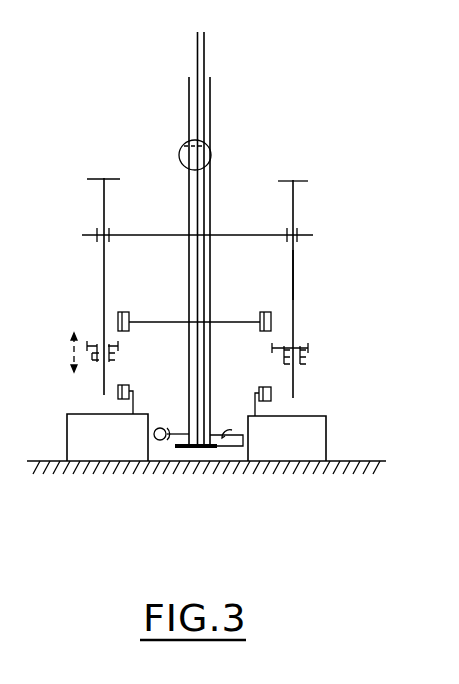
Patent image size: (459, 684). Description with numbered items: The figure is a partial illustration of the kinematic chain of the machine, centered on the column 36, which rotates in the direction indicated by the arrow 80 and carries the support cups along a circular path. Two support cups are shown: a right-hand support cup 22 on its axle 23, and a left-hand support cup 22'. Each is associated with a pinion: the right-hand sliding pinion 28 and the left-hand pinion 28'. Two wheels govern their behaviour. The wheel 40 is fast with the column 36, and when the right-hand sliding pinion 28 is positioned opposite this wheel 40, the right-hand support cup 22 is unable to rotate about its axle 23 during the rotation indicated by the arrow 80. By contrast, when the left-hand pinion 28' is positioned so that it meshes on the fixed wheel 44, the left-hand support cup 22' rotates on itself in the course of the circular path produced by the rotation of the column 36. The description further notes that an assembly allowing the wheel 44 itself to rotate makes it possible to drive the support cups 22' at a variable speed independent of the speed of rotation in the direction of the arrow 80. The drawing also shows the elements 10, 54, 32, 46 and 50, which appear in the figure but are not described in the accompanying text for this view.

The central mast 10 is at (204, 62).
The column 36 is at (210, 117).
The arrow 80 is at (211, 159).
The right-hand support cup 22 is at (322, 272).
The left-hand support cup 22' is at (100, 260).
The axle 23 is at (293, 272).
The upper cross bar 54 is at (232, 235).
The wheel 40 is at (271, 322).
The right-hand sliding pinion 28 is at (323, 351).
The left-hand pinion 28' is at (75, 367).
The fixed wheel 44 is at (271, 392).
The base 32 is at (326, 445).
The roller 46 is at (148, 446).
The pivot 50 is at (228, 440).